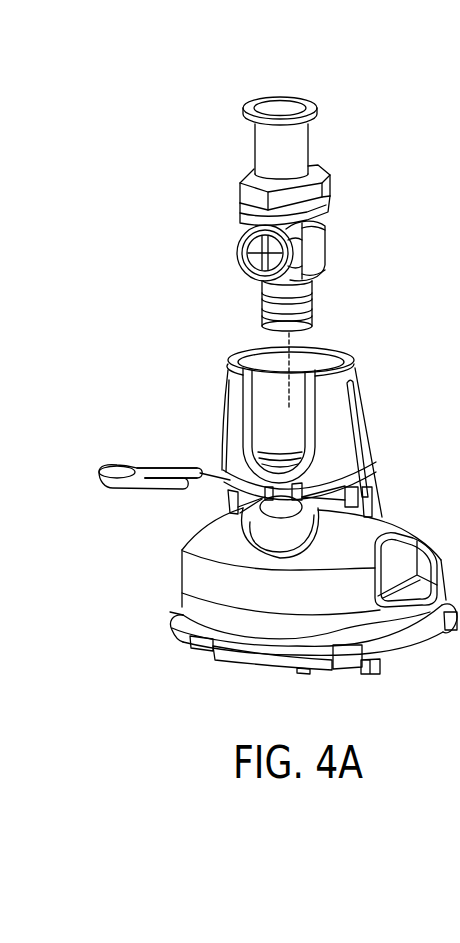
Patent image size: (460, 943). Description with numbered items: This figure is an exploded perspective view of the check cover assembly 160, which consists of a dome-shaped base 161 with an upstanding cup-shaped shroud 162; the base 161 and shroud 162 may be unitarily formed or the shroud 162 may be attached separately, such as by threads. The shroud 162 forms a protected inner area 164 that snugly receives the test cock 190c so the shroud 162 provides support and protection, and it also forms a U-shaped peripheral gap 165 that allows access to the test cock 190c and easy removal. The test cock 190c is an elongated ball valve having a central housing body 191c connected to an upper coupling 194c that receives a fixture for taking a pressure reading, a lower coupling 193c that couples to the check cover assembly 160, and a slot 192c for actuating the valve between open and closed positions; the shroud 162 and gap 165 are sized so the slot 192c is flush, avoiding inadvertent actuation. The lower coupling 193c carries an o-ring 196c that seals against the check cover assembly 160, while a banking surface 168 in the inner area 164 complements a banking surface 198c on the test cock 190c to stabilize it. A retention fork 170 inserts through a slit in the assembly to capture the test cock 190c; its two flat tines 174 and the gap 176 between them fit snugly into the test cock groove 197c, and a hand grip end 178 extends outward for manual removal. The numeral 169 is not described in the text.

The check cover assembly 160 is at (285, 608).
The dome-shaped base 161 is at (181, 552).
The cup-shaped shroud 162 is at (228, 417).
The inner area 164 is at (293, 373).
The U-shaped peripheral gap 165 is at (292, 410).
The banking surface 168 is at (302, 452).
The aperture in housing 169 is at (267, 530).
The retention fork 170 is at (108, 489).
The flat tines 174 is at (176, 467).
The gap 176 is at (145, 485).
The hand grip end 178 is at (99, 473).
The test cock 190c is at (245, 207).
The central housing body 191c is at (320, 242).
The slot 192c is at (250, 252).
The lower coupling 193c is at (264, 305).
The upper coupling 194c is at (262, 134).
The o-ring 196c is at (308, 312).
The test cock groove 197c is at (265, 297).
The banking surface 198c is at (323, 260).